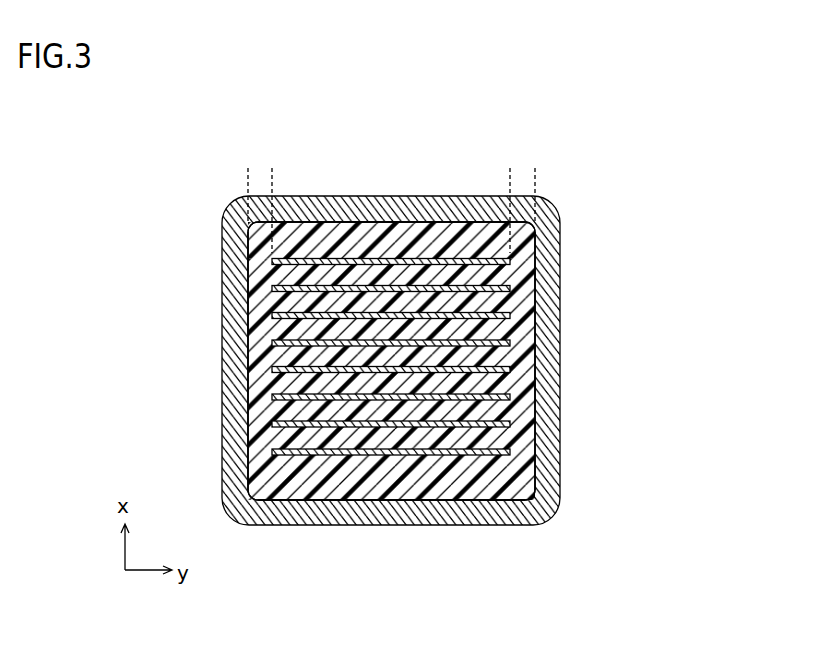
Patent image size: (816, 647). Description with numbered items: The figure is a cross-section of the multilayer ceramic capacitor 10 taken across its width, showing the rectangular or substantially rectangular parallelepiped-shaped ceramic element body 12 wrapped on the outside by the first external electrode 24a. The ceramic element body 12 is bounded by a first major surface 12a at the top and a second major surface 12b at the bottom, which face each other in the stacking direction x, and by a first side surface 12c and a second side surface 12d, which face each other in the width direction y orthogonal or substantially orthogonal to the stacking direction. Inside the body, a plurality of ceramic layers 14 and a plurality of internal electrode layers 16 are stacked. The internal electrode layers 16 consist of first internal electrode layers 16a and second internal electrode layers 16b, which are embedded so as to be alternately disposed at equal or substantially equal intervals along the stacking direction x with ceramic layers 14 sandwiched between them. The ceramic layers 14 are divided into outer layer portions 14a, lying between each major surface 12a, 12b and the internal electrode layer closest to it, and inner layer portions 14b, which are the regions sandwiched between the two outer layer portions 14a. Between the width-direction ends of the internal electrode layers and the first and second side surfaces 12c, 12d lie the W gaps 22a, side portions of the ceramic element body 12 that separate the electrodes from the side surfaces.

The multilayer ceramic capacitor 10 is at (180, 183).
The ceramic element body 12 is at (468, 221).
The first major surface 12a is at (300, 221).
The second major surface 12b is at (310, 503).
The first side surface 12c is at (235, 352).
The second side surface 12d is at (528, 376).
The ceramic layers 14 is at (391, 365).
The outer layer portions 14a is at (350, 246).
The inner layer portions 14b is at (428, 328).
The internal electrode layers 16 is at (442, 392).
The first internal electrode layers 16a is at (274, 294).
The second internal electrode layers 16b is at (510, 344).
The W gaps 22a is at (272, 168).
The first external electrode 24a is at (548, 278).